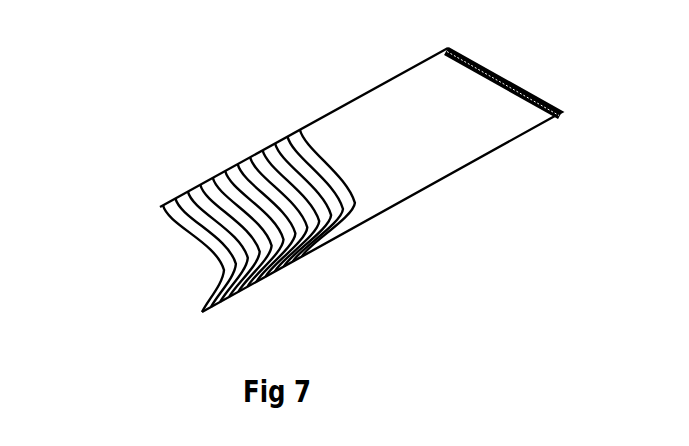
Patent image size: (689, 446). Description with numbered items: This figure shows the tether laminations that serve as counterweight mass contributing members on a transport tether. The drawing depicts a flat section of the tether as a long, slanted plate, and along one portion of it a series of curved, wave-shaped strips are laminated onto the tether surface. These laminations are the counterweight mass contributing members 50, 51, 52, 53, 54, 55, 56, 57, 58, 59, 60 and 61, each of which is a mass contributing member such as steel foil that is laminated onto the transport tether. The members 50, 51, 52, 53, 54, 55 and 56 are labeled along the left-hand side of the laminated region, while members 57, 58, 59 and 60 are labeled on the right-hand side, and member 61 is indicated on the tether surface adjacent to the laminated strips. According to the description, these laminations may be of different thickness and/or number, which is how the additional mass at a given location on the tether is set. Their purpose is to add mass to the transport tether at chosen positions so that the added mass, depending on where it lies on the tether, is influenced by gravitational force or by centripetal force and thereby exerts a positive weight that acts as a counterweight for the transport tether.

The counterweight mass contributing member 50 is at (177, 223).
The counterweight mass contributing member 51 is at (160, 208).
The counterweight mass contributing member 52 is at (184, 194).
The counterweight mass contributing member 53 is at (200, 187).
The counterweight mass contributing member 54 is at (215, 178).
The counterweight mass contributing member 55 is at (231, 178).
The counterweight mass contributing member 56 is at (245, 163).
The counterweight mass contributing member 57 is at (293, 258).
The counterweight mass contributing member 58 is at (305, 252).
The counterweight mass contributing member 59 is at (315, 243).
The counterweight mass contributing member 60 is at (348, 200).
The counterweight mass contributing member 61 is at (325, 137).